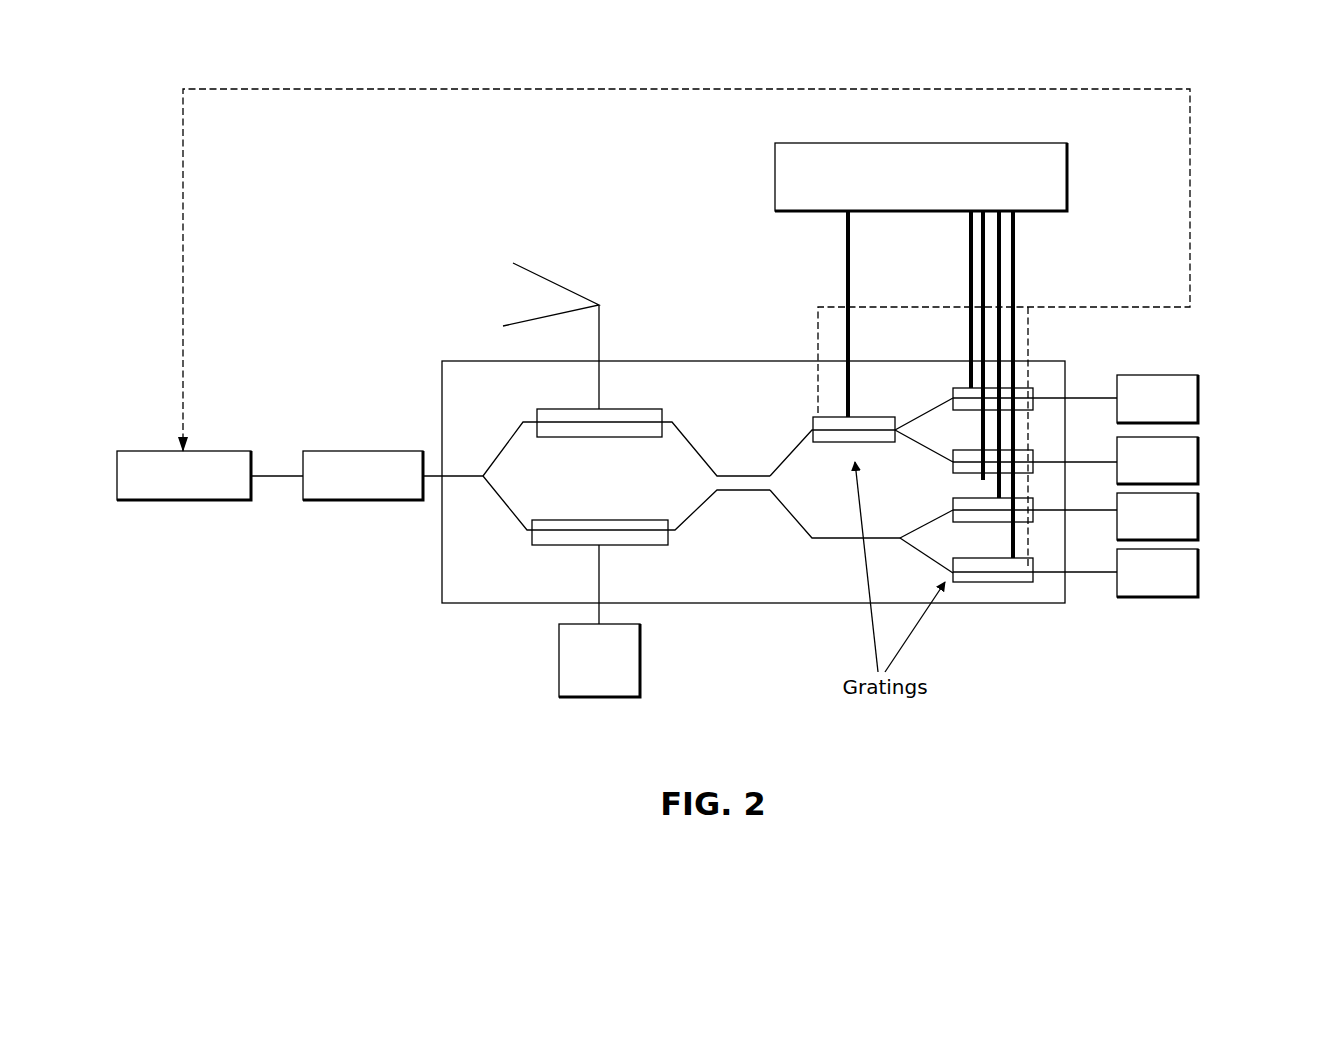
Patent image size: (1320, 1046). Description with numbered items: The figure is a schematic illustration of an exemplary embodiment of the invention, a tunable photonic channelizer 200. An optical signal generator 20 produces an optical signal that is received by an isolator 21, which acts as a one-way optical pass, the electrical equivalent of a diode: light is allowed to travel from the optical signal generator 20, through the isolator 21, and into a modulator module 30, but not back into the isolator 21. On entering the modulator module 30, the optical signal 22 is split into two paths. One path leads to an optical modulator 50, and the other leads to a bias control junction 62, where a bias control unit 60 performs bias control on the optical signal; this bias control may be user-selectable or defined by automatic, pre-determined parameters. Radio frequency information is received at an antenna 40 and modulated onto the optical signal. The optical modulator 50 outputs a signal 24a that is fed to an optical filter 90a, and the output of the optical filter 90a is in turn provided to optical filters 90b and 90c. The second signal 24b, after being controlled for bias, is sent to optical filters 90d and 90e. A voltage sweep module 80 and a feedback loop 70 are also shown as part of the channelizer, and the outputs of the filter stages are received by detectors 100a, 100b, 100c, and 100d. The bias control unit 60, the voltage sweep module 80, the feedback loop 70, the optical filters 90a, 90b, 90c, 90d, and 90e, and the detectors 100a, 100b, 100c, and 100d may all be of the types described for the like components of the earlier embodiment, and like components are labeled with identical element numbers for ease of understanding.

The optical signal generator 20 is at (226, 451).
The isolator 21 is at (361, 451).
The optical signal 22 is at (455, 476).
The signal 24a is at (795, 456).
The signal 24b is at (791, 512).
The modulator module 30 is at (437, 586).
The antenna 40 is at (520, 296).
The optical modulator 50 is at (618, 409).
The bias control unit 60 is at (642, 650).
The bias control junction 62 is at (612, 520).
The feedback loop 70 is at (820, 89).
The voltage sweep module 80 is at (932, 143).
The optical filter 90a is at (831, 445).
The optical filter 90b is at (953, 398).
The optical filter 90c is at (953, 462).
The optical filter 90d is at (953, 510).
The optical filter 90e is at (953, 572).
The detector 100a is at (1200, 398).
The detector 100b is at (1200, 462).
The detector 100c is at (1200, 510).
The detector 100d is at (1200, 572).
The tunable photonic channelizer 200 is at (1227, 703).